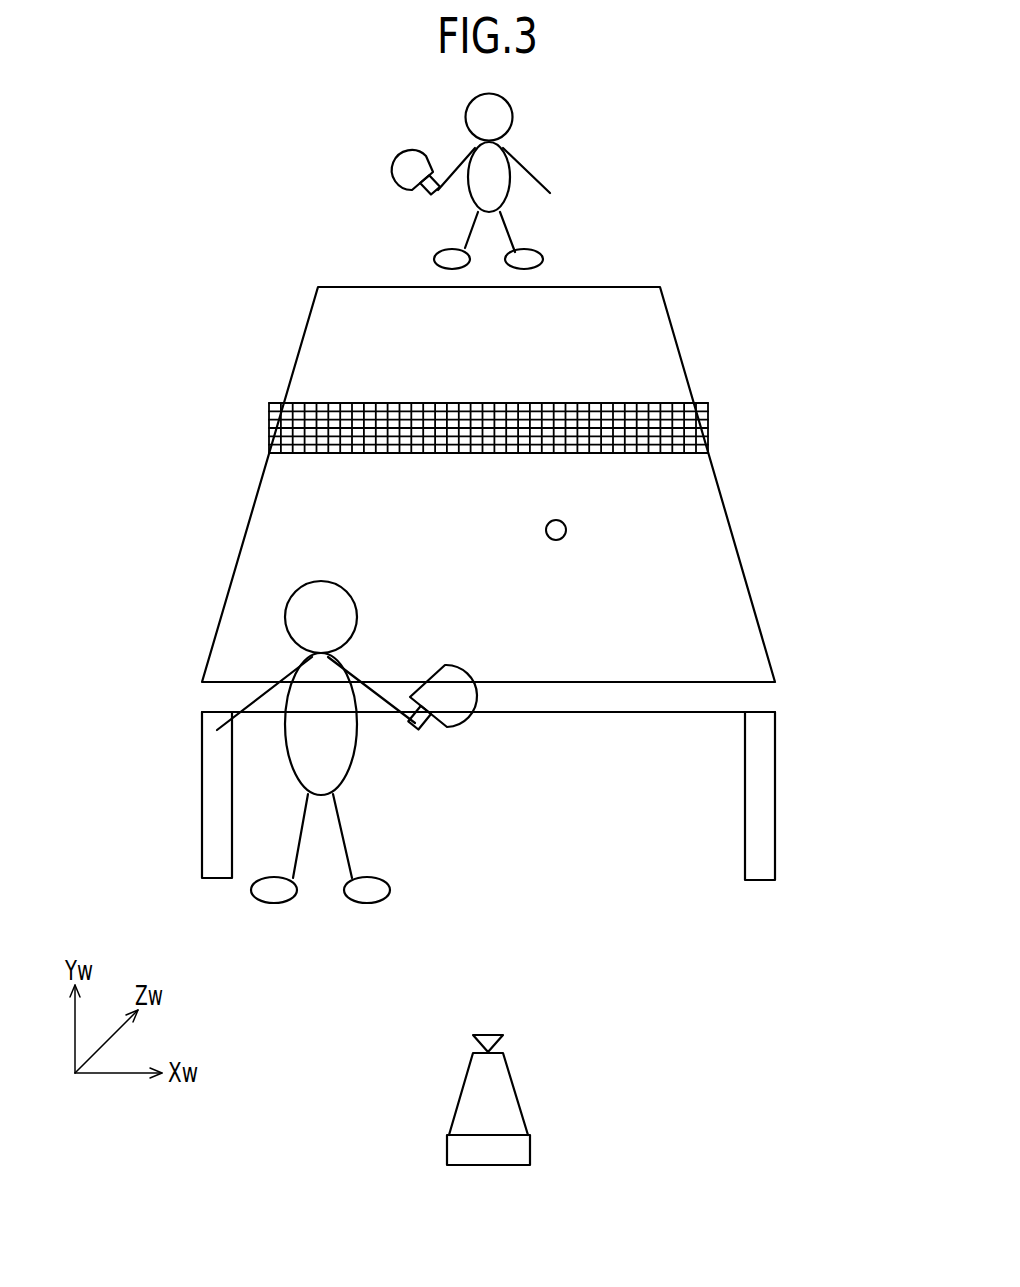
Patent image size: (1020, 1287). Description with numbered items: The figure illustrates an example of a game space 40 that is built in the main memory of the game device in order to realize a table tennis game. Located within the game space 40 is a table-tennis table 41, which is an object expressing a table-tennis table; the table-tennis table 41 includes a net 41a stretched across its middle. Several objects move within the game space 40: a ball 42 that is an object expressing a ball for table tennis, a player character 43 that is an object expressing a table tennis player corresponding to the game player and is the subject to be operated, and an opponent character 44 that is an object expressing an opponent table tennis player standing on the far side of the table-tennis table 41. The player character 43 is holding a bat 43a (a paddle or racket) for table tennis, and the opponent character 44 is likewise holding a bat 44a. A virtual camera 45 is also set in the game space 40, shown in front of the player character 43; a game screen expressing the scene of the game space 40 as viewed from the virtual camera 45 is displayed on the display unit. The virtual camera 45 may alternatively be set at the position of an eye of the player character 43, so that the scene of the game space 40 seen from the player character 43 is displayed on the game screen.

The game space 40 is at (770, 249).
The table-tennis table 41 is at (736, 543).
The net 41a is at (710, 403).
The ball 42 is at (567, 530).
The player character 43 is at (360, 593).
The bat 43a is at (457, 722).
The opponent character 44 is at (513, 112).
The bat 44a is at (405, 152).
The virtual camera 45 is at (517, 1082).